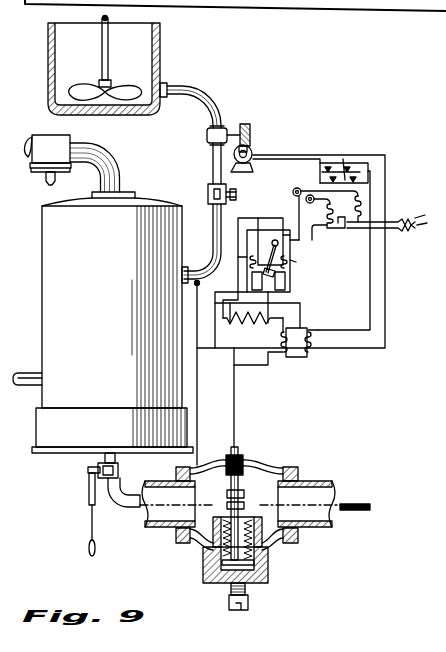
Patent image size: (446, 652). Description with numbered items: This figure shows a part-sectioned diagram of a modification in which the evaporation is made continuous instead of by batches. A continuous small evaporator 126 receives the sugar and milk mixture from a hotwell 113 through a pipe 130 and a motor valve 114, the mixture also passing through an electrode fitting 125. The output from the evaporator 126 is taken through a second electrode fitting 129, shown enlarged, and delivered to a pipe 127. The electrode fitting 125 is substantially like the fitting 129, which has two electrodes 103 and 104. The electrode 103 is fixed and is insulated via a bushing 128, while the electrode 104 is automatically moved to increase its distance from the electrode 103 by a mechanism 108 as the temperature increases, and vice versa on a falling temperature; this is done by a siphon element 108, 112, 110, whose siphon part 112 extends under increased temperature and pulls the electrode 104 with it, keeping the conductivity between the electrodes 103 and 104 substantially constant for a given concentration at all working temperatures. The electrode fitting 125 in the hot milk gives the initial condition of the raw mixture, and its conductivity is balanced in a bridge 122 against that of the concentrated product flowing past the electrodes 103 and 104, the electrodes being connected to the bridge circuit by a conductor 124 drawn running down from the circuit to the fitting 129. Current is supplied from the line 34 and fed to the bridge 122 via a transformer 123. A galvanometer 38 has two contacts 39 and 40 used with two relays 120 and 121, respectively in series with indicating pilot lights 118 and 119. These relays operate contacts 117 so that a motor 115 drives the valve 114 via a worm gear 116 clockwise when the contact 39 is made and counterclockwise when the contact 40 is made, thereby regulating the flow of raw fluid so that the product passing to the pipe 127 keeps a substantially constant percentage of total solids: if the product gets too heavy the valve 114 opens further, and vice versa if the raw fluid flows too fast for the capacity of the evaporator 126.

The hotwell 113 is at (104, 66).
The pipe 130 is at (216, 95).
The motor valve 114 is at (201, 137).
The worm gear 116 is at (251, 128).
The motor 115 is at (260, 153).
The electrode fitting 125 is at (207, 188).
The contact 39 is at (211, 257).
The continuous small evaporator 126 is at (103, 345).
The contacts 117 is at (350, 160).
The indicating pilot light 118 is at (301, 187).
The indicating pilot light 119 is at (293, 192).
The relay 120 is at (327, 232).
The relay 121 is at (360, 228).
The line 34 is at (387, 236).
The galvanometer 38 is at (298, 286).
The contact 40 is at (292, 263).
The bridge 122 is at (246, 327).
The transformer 123 is at (301, 358).
The conductor 124 is at (206, 398).
The bushing 128 is at (246, 456).
The electrode 104 is at (183, 504).
The electrode fitting 129 is at (292, 467).
The pipe 127 is at (360, 496).
The electrode 103 is at (258, 499).
The siphon part 112 is at (203, 571).
The mechanism 108 is at (280, 553).
The siphon element 110 is at (258, 599).